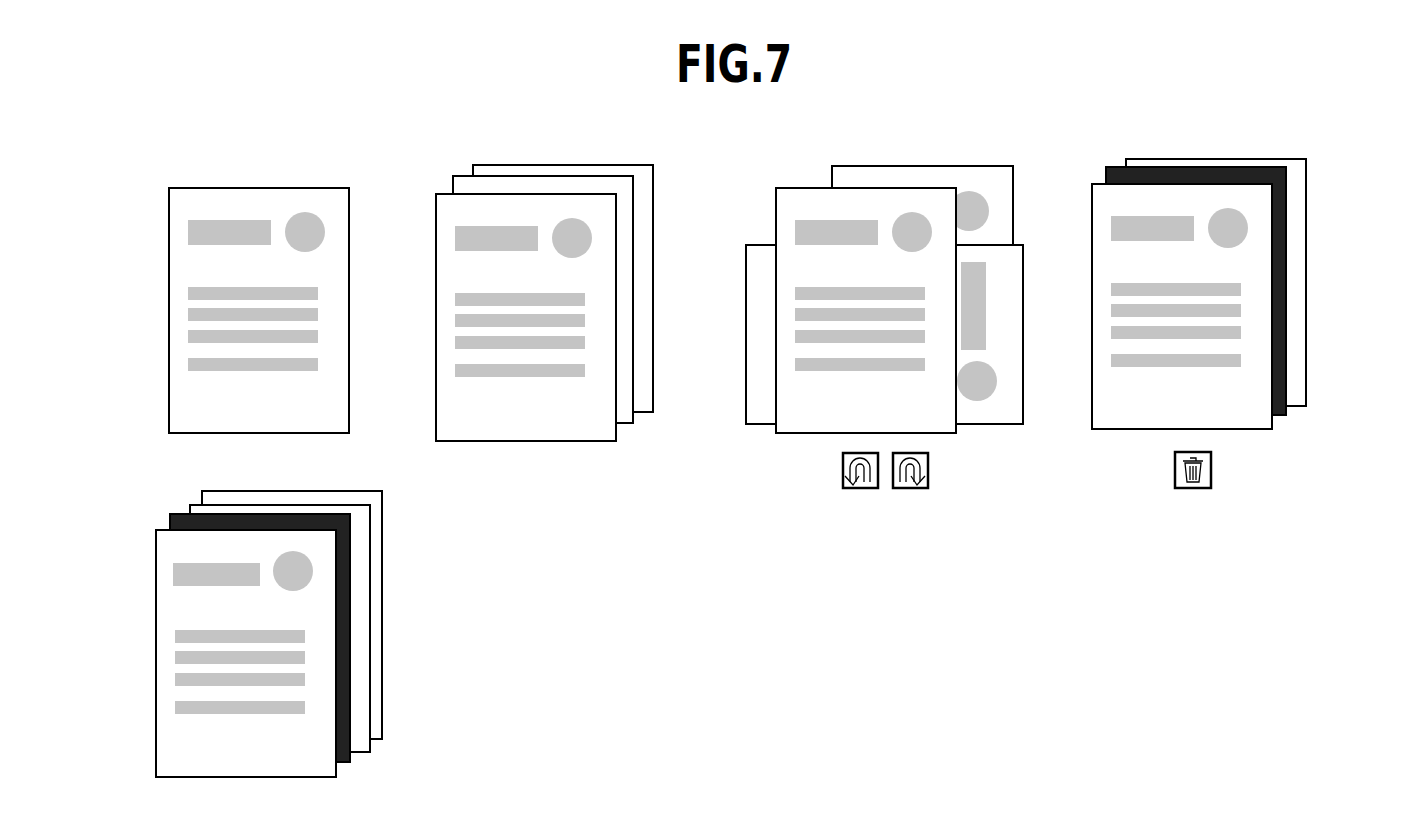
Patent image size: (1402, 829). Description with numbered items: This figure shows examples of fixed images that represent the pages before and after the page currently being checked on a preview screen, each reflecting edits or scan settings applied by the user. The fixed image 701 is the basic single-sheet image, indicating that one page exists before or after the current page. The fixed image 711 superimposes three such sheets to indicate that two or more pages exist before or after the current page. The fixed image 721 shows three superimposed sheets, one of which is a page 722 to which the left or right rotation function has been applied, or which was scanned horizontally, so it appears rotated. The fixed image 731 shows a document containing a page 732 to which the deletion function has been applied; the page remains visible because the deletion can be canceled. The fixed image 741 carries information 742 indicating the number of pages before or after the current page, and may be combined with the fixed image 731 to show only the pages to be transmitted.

The fixed image 701 is at (260, 192).
The fixed image 711 is at (443, 205).
The fixed image 721 is at (884, 306).
The page 722 is at (980, 357).
The fixed image 731 is at (1220, 274).
The page 732 is at (1288, 296).
The fixed image 741 is at (239, 620).
The information 742 is at (292, 585).